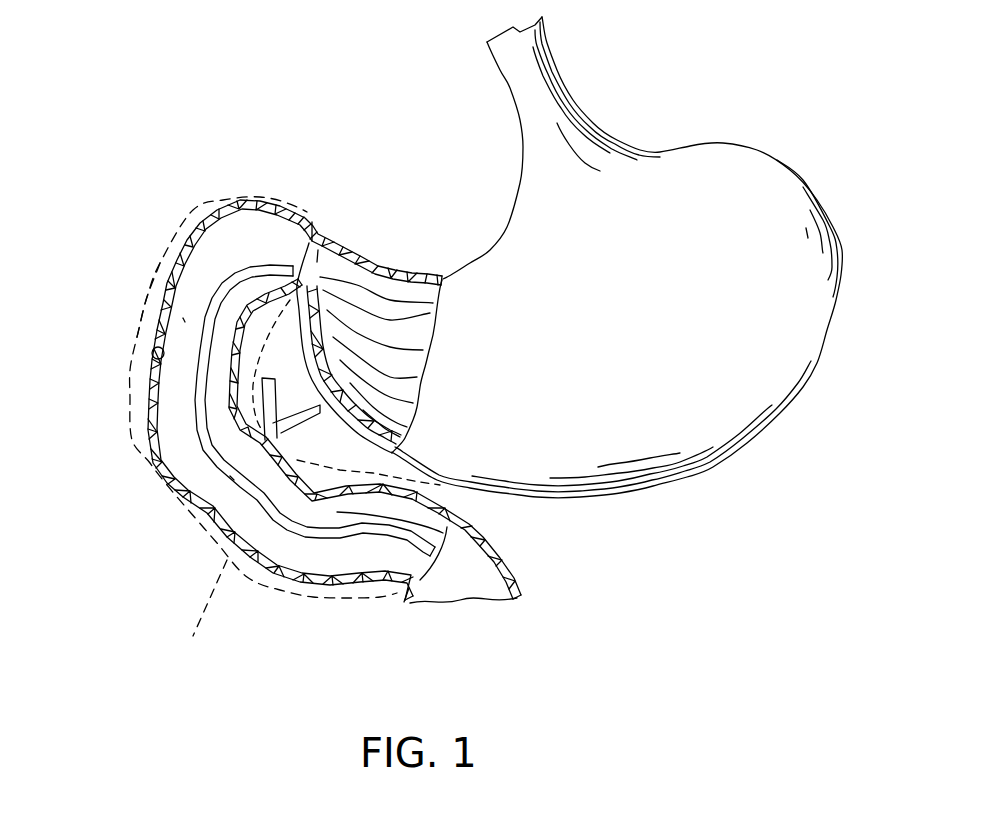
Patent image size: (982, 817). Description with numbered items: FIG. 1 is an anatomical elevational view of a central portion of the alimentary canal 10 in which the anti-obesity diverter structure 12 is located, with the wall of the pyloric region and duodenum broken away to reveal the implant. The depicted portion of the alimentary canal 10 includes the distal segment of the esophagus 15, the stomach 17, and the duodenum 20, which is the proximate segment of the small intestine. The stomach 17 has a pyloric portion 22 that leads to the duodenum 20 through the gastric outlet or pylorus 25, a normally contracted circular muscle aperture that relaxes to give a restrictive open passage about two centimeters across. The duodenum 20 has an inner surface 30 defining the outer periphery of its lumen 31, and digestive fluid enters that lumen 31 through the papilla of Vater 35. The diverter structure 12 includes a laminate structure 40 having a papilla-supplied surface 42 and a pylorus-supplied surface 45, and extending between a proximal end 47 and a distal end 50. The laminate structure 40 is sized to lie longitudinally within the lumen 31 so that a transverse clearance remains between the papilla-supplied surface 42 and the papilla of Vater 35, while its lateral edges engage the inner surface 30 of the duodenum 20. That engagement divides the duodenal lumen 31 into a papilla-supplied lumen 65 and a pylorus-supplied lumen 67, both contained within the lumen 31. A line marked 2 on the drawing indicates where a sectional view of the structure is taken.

The section line 2 is at (204, 617).
The alimentary canal 10 is at (181, 261).
The anti-obesity diverter structure 12 is at (247, 272).
The esophagus 15 is at (533, 74).
The stomach 17 is at (660, 440).
The duodenum 20 is at (164, 279).
The pyloric portion 22 is at (332, 253).
The pylorus 25 is at (313, 232).
The inner surface 30 is at (163, 359).
The lumen 31 is at (470, 565).
The papilla of Vater 35 is at (290, 443).
The laminate structure 40 is at (228, 284).
The papilla-supplied surface 42 is at (208, 364).
The pylorus-supplied surface 45 is at (230, 477).
The proximal end 47 is at (302, 287).
The distal end 50 is at (447, 527).
The papilla-supplied lumen 65 is at (455, 528).
The pylorus-supplied lumen 67 is at (183, 318).